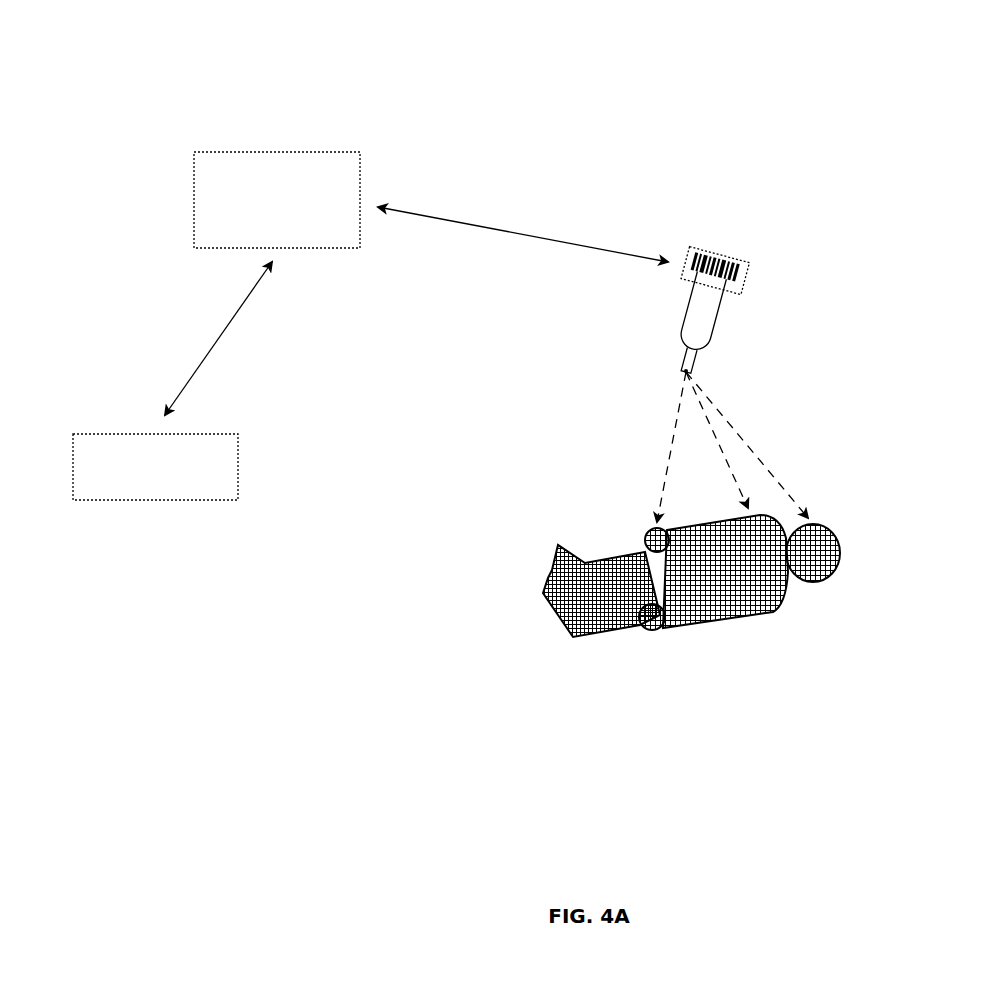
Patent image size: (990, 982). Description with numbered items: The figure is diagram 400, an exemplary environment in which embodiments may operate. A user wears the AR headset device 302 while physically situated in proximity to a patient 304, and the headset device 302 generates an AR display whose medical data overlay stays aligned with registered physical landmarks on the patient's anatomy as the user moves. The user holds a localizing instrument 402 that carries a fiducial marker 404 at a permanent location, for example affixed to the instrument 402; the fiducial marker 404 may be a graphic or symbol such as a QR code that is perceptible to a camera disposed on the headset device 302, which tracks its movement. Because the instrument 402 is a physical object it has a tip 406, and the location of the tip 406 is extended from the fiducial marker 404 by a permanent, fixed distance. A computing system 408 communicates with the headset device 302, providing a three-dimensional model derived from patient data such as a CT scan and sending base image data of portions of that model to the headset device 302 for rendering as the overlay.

The diagram 400 is at (502, 319).
The AR headset device 302 is at (277, 200).
The computing system(s) 408 is at (155, 467).
The localizing instrument 402 is at (720, 320).
The fiducial marker 404 is at (738, 263).
The tip 406 is at (690, 370).
The patient 304 is at (830, 555).